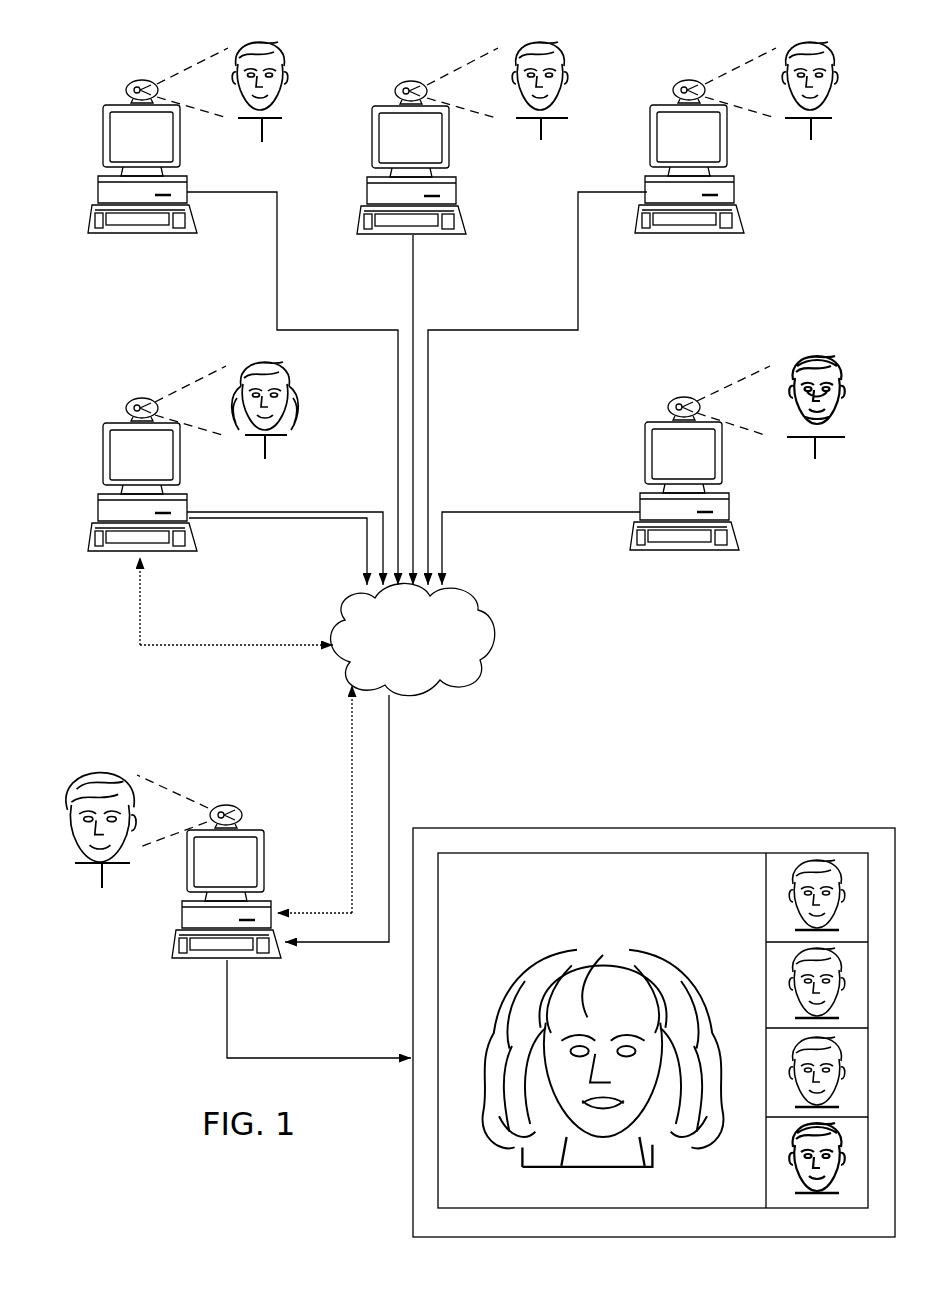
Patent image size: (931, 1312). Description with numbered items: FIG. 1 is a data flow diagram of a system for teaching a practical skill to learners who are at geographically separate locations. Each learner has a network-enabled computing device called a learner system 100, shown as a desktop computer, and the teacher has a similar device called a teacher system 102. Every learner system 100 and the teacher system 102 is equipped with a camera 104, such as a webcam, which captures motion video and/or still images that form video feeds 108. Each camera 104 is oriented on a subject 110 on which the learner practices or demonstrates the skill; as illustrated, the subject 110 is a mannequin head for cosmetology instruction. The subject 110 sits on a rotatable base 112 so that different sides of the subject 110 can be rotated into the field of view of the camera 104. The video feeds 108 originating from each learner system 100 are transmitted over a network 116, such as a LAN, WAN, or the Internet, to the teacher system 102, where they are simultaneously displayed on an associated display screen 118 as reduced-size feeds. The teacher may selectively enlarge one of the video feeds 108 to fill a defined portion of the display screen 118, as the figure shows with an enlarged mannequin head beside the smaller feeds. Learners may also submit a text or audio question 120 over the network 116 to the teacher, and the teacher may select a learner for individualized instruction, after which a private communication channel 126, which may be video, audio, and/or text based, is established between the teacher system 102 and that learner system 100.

The learner system 100 is at (70, 227).
The teacher system 102 is at (134, 913).
The camera 104 is at (134, 82).
The video feeds 108 is at (455, 512).
The subject 110 is at (283, 46).
The rotatable base 112 is at (262, 138).
The network 116 is at (413, 639).
The display screen 118 is at (618, 828).
The question 120 is at (333, 519).
The private communication channel 126 is at (352, 712).